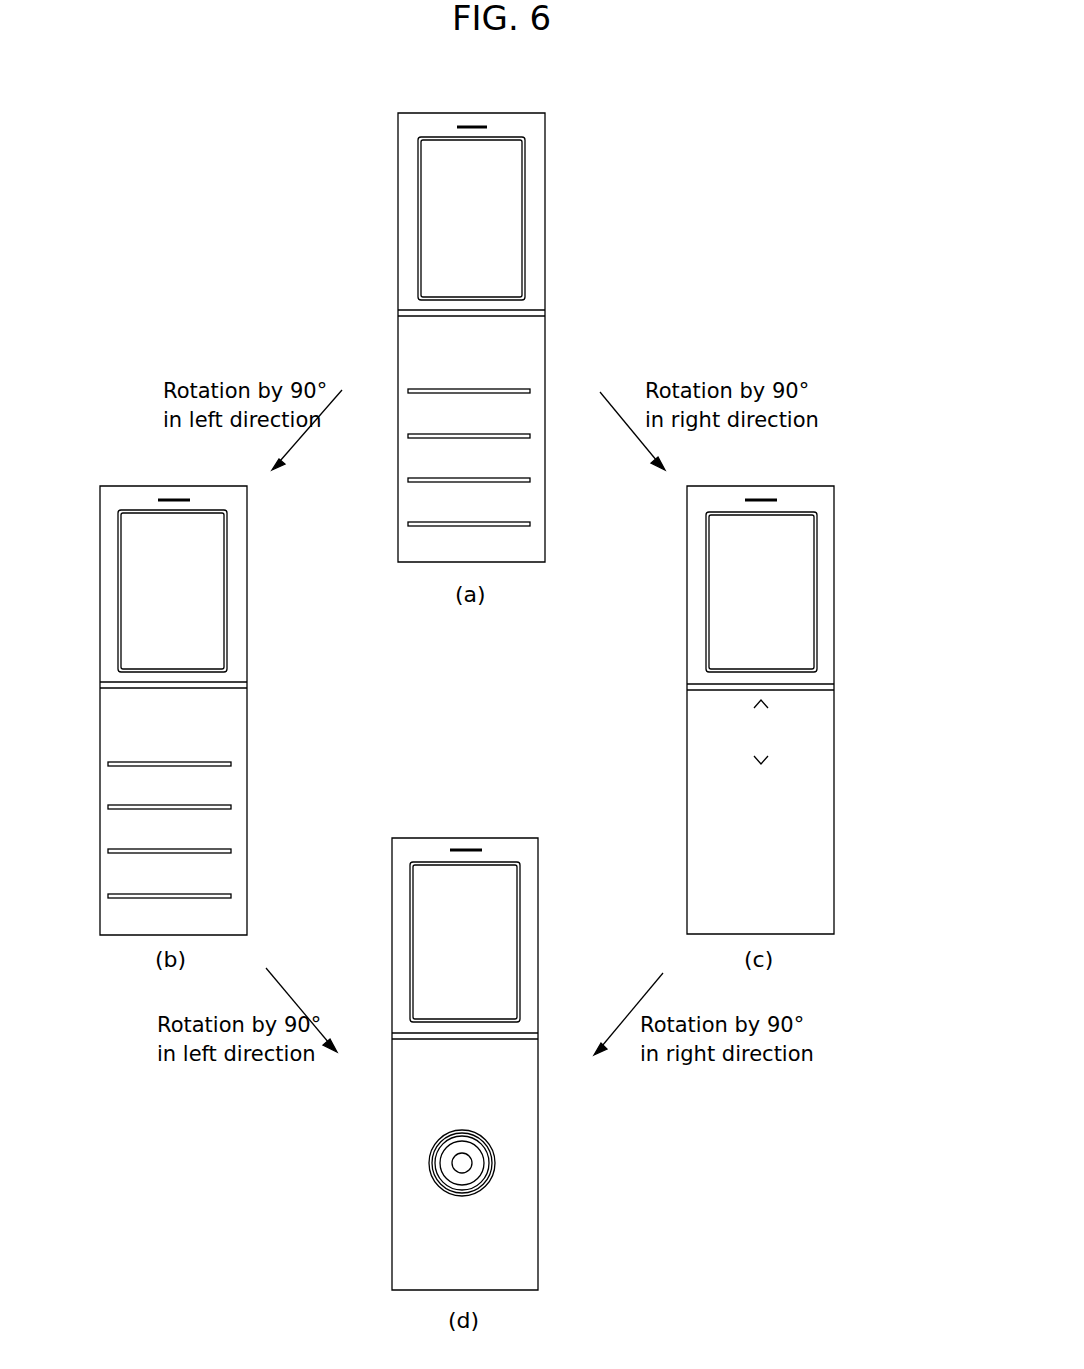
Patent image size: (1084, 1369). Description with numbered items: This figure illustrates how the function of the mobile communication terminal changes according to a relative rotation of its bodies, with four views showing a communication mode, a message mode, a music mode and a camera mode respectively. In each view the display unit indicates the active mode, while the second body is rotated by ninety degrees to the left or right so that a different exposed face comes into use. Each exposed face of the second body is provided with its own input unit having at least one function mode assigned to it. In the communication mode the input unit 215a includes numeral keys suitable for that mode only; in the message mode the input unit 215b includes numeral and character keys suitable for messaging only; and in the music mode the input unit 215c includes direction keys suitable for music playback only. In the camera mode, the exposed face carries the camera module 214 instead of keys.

The input unit 215a is at (537, 373).
The input unit 215b is at (232, 744).
The input unit 215c is at (820, 800).
The camera module 214 is at (496, 1162).